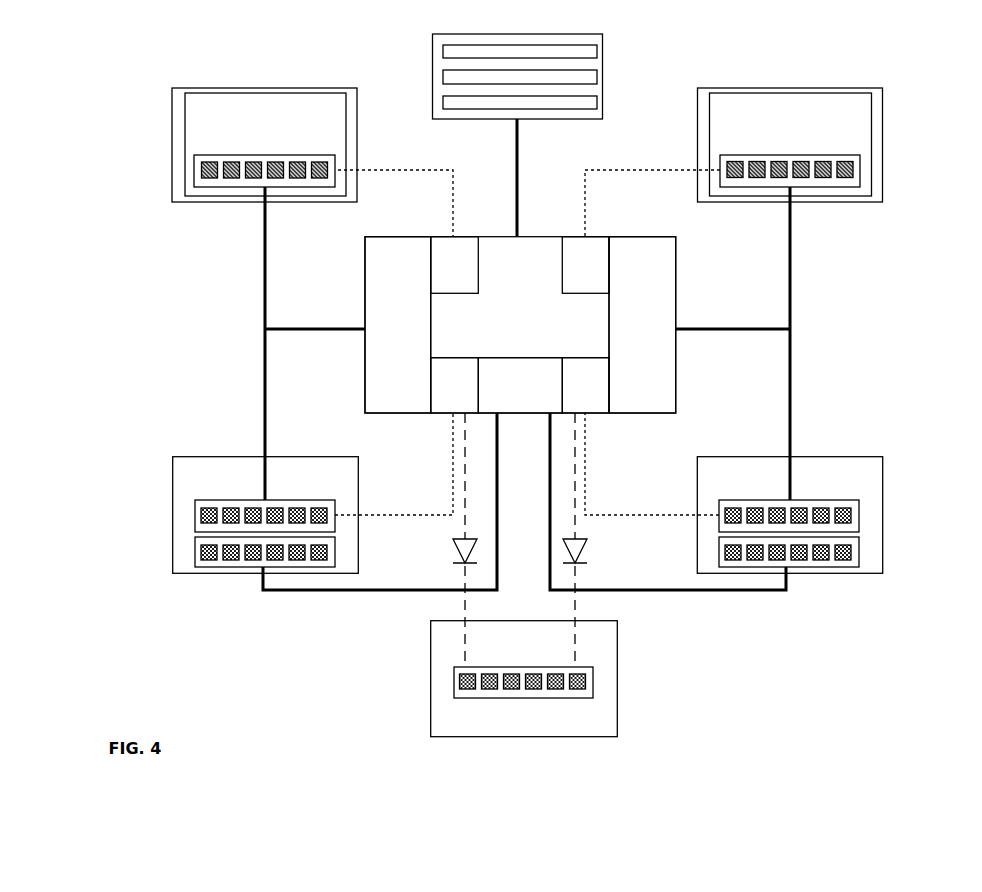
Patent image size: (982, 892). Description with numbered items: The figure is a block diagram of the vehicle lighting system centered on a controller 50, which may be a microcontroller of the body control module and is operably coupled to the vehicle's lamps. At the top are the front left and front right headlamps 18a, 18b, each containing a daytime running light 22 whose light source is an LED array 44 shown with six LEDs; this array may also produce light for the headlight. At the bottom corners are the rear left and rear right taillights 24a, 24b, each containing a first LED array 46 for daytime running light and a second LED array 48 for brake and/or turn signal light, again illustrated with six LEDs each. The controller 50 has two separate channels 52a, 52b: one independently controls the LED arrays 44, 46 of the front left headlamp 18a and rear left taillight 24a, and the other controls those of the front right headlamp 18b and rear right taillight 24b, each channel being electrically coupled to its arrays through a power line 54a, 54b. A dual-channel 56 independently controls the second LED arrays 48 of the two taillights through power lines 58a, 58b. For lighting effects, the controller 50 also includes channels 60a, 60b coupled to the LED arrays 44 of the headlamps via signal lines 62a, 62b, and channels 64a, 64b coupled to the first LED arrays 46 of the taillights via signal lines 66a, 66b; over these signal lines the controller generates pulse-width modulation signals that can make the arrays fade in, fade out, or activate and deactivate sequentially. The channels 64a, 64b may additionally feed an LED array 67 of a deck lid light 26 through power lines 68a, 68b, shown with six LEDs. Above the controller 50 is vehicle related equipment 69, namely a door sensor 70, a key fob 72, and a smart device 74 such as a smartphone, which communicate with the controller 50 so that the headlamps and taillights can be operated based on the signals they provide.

The front left headlamp 18a is at (302, 87).
The front right headlamp 18b is at (830, 88).
The daytime running light 22 is at (217, 93).
The LED array 44 is at (194, 168).
The vehicle related equipment 69 is at (603, 62).
The door sensor 70 is at (597, 49).
The key fob 72 is at (597, 75).
The smart device 74 is at (597, 102).
The signal line 62a is at (383, 170).
The signal line 62b is at (670, 169).
The controller 50 is at (509, 314).
The channel 52a is at (380, 298).
The channel 52b is at (656, 298).
The channel 60a is at (463, 252).
The channel 60b is at (578, 252).
The channel 64a is at (449, 393).
The channel 64b is at (589, 393).
The dual-channel 56 is at (524, 393).
The power line 54a is at (318, 338).
The power line 54b is at (739, 338).
The rear left taillight 24a is at (213, 456).
The rear right taillight 24b is at (861, 455).
The first LED array 46 is at (195, 515).
The second LED array 48 is at (195, 556).
The signal line 66a is at (373, 513).
The signal line 66b is at (667, 513).
The power line 58a is at (368, 592).
The power line 58b is at (672, 592).
The power line 68a is at (470, 595).
The power line 68b is at (578, 596).
The deck lid light 26 is at (578, 738).
The LED array 67 is at (593, 680).